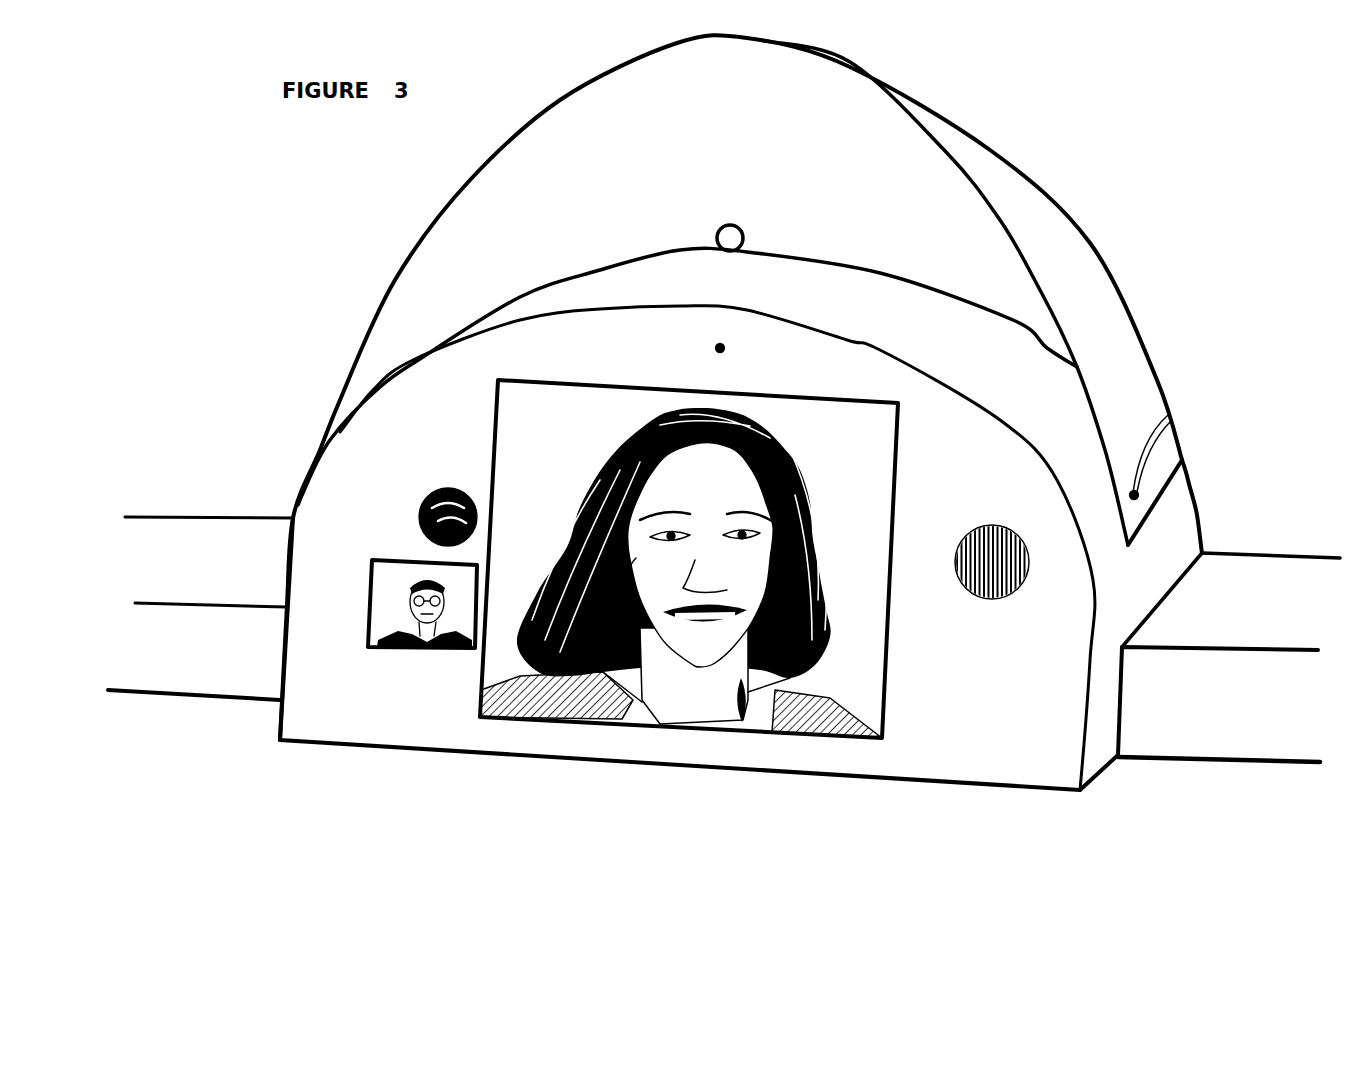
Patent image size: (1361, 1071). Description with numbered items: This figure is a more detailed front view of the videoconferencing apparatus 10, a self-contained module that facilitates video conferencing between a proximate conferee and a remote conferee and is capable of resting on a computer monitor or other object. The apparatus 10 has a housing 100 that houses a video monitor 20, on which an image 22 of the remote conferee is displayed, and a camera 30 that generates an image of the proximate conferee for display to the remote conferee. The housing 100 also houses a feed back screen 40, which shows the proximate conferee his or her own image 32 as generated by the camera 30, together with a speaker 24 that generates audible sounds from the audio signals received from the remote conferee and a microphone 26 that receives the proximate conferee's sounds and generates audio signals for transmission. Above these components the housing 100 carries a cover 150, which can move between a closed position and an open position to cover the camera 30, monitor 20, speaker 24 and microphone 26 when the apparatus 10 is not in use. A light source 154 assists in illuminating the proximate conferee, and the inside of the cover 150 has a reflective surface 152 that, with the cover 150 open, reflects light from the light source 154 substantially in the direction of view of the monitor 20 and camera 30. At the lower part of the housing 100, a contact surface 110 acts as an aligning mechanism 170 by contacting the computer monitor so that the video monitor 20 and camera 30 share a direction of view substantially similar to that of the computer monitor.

The videoconferencing apparatus 10 is at (1200, 410).
The video monitor 20 is at (912, 410).
The image of the remote conferee 22 is at (830, 512).
The speaker 24 is at (1053, 563).
The microphone 26 is at (705, 345).
The camera 30 is at (427, 482).
The image of the proximate conferee 32 is at (410, 567).
The feed back screen 40 is at (363, 587).
The housing 100 is at (1203, 508).
The contact surface 110 is at (1170, 603).
The cover 150 is at (1097, 243).
The reflective surface 152 is at (875, 150).
The light source 154 is at (760, 238).
The aligning mechanism 170 is at (1123, 737).